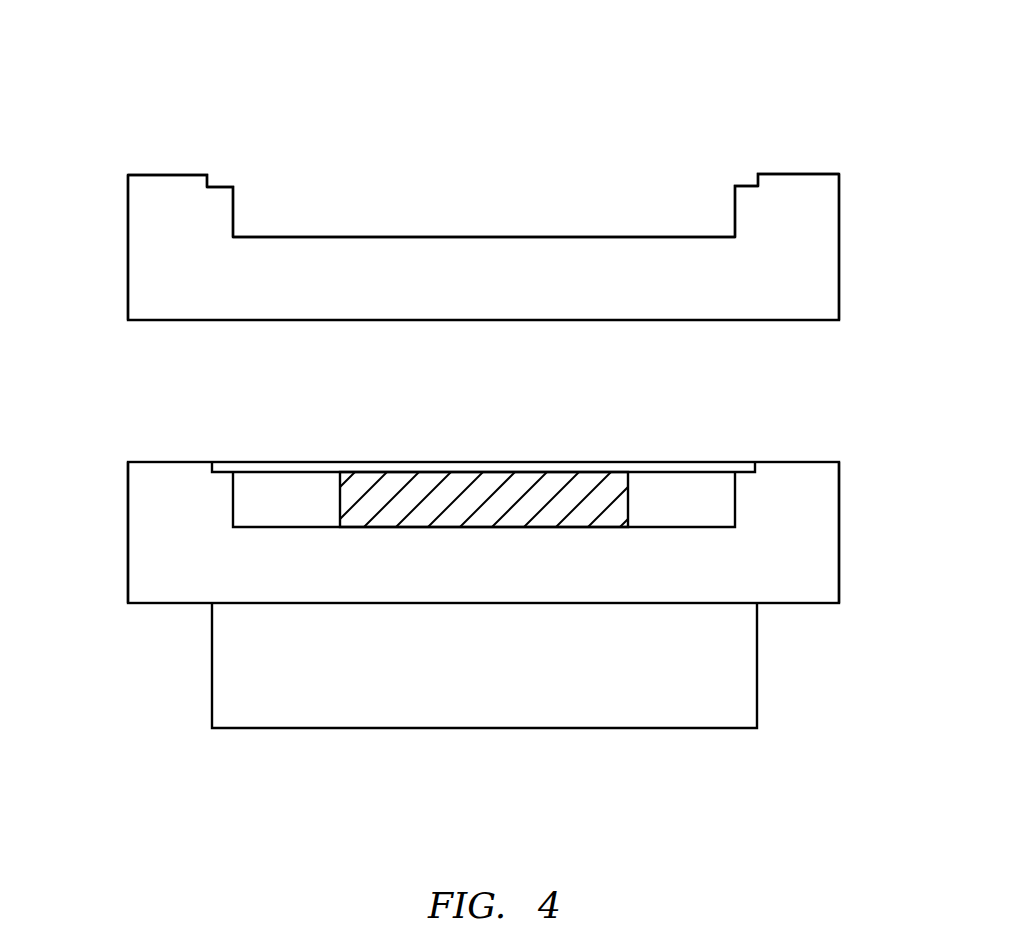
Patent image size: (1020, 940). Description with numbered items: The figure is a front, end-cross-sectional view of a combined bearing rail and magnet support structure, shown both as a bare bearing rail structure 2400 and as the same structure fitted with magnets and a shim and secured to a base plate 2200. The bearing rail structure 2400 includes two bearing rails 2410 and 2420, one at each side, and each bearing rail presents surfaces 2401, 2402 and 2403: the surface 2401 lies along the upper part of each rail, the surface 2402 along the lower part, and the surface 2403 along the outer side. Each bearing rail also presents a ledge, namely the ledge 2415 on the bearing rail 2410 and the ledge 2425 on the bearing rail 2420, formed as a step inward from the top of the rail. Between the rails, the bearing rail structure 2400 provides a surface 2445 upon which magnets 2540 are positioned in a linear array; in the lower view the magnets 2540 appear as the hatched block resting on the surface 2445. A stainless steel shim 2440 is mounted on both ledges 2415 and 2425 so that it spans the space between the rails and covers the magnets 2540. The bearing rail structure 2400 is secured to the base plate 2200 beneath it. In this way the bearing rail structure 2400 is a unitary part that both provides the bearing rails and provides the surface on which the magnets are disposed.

The bearing rail structure 2400 is at (445, 321).
The bearing rail 2420 is at (126, 170).
The bearing rail 2410 is at (838, 170).
The ledge 2425 is at (222, 182).
The ledge 2415 is at (742, 182).
The surface 2445 is at (437, 236).
The surface 2403 is at (126, 242).
The surface 2401 is at (143, 180).
The surface 2402 is at (165, 315).
The stainless steel shim 2440 is at (272, 466).
The magnets 2540 is at (420, 518).
The base plate 2200 is at (455, 730).